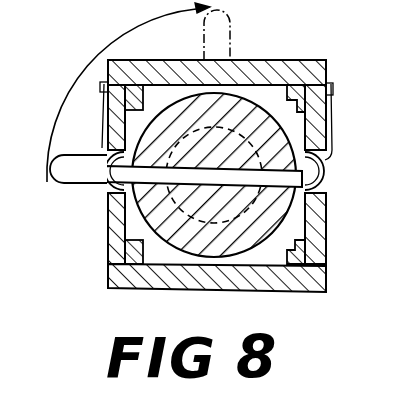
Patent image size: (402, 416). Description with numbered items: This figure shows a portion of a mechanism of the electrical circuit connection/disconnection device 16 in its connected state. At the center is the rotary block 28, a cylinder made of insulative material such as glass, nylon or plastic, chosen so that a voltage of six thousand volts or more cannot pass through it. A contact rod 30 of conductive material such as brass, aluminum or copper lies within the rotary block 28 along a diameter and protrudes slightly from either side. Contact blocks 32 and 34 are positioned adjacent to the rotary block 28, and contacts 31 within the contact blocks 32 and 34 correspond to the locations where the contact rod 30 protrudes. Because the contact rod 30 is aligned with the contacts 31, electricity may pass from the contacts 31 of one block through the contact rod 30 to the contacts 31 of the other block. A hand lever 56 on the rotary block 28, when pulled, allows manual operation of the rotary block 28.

The electrical circuit connection/disconnection device 16 is at (76, 60).
The rotary block 28 is at (310, 252).
The contact rod 30 is at (323, 213).
The contacts 31 is at (103, 183).
The contact block 32 is at (108, 236).
The contact block 34 is at (323, 263).
The hand lever 56 is at (232, 33).